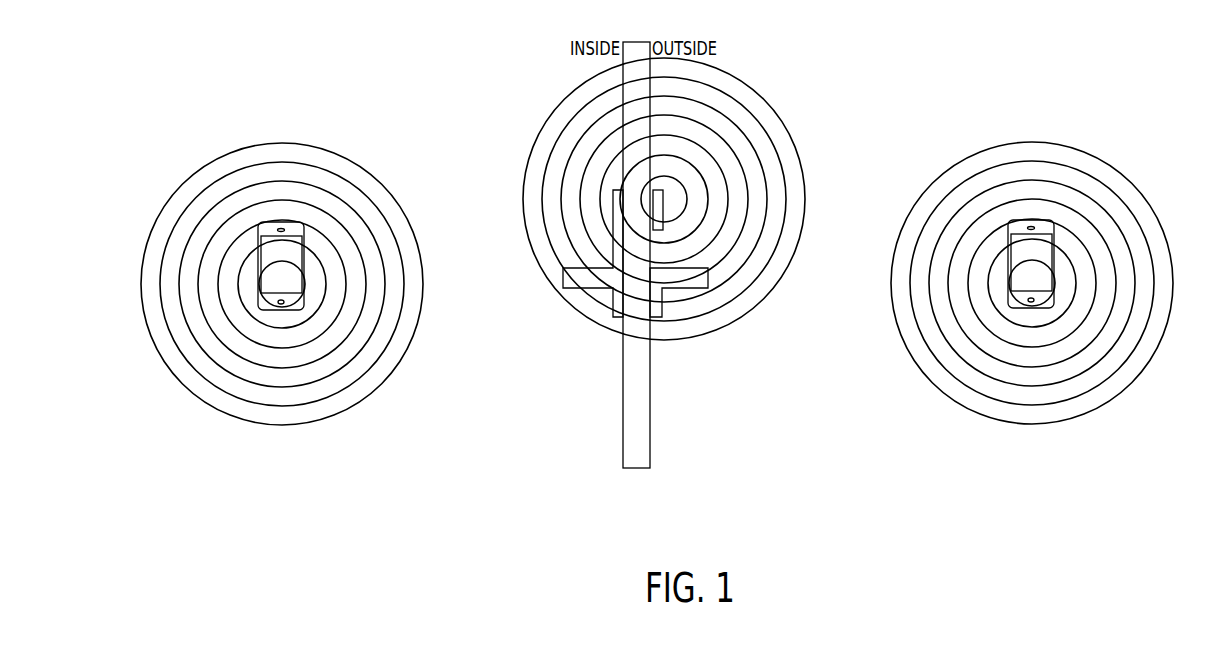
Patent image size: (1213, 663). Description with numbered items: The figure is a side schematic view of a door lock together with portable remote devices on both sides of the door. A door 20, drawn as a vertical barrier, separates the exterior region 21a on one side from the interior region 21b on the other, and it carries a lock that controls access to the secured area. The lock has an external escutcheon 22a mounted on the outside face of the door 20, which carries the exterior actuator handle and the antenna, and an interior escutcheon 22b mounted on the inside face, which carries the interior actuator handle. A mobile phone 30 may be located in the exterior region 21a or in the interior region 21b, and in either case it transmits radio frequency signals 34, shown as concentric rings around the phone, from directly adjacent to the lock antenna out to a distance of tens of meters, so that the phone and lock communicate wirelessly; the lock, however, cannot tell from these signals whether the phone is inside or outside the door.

The door 20 is at (652, 423).
The exterior region 21a is at (690, 478).
The interior region 21b is at (580, 470).
The external escutcheon 22a is at (658, 291).
The interior escutcheon 22b is at (600, 293).
The mobile phone 30 is at (307, 300).
The radio frequency signals 34 is at (325, 188).